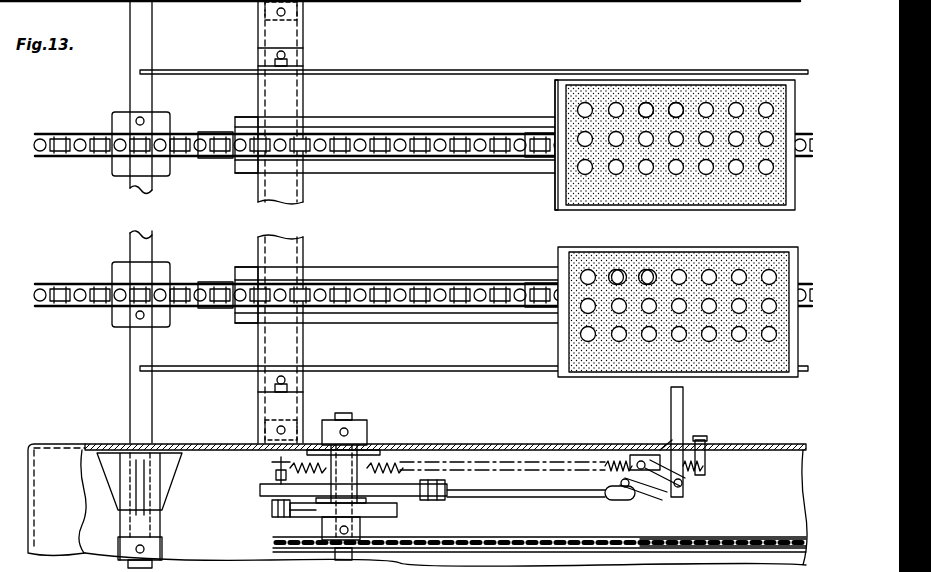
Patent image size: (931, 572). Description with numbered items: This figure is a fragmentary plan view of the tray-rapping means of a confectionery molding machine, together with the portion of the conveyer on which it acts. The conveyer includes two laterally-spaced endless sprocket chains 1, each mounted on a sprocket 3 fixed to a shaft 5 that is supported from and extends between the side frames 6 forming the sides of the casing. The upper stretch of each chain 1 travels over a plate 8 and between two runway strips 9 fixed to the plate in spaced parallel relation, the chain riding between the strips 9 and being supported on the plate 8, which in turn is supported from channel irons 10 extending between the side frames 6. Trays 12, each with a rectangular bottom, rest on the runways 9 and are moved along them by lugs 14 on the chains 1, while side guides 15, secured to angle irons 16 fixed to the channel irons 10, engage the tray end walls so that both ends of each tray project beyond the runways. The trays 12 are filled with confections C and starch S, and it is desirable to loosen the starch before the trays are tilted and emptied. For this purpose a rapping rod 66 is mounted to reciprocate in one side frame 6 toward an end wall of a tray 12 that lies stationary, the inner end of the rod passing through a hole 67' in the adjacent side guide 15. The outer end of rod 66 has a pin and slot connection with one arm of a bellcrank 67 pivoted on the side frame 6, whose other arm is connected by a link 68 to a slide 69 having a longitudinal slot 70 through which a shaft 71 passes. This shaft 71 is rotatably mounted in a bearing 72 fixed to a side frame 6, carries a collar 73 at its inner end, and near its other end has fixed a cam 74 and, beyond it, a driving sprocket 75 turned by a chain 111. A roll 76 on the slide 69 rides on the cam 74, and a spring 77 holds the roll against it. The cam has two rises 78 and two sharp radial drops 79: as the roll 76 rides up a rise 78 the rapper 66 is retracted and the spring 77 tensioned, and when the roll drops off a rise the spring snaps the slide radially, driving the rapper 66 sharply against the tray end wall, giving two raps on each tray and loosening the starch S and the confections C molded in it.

The endless sprocket chain 1 is at (407, 283).
The sprocket 3 is at (170, 168).
The shaft 5 is at (138, 230).
The side frame 6 is at (380, 0).
The plate 8 is at (236, 162).
The runway strip 9 is at (375, 160).
The channel iron 10 is at (303, 200).
The tray 12 is at (560, 258).
The lug 14 is at (222, 132).
The side guide 15 is at (545, 74).
The angle iron 16 is at (297, 58).
The confections C is at (676, 103).
The starch S is at (748, 230).
The rapping rod 66 is at (684, 405).
The bellcrank 67 is at (656, 491).
The hole 67' is at (642, 411).
The link 68 is at (572, 497).
The slide 69 is at (447, 495).
The longitudinal slot 70 is at (285, 471).
The shaft 71 is at (360, 396).
The bearing 72 is at (346, 468).
The collar 73 is at (367, 425).
The cam 74 is at (302, 517).
The driving sprocket 75 is at (285, 549).
The roll 76 is at (272, 508).
The spring 77 is at (392, 468).
The rise 78 is at (380, 513).
The radial drop 79 is at (262, 494).
The chain 111 is at (760, 540).